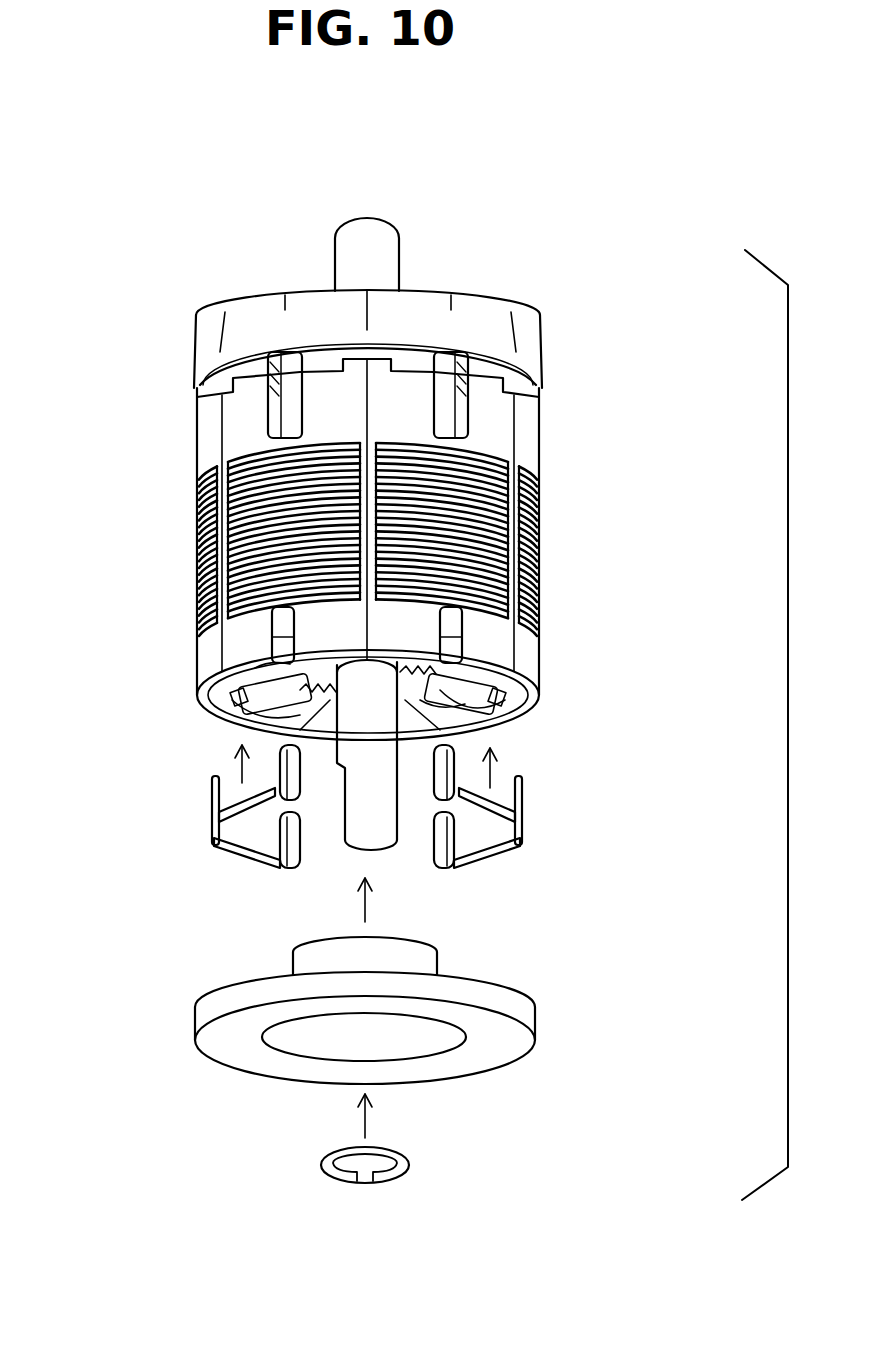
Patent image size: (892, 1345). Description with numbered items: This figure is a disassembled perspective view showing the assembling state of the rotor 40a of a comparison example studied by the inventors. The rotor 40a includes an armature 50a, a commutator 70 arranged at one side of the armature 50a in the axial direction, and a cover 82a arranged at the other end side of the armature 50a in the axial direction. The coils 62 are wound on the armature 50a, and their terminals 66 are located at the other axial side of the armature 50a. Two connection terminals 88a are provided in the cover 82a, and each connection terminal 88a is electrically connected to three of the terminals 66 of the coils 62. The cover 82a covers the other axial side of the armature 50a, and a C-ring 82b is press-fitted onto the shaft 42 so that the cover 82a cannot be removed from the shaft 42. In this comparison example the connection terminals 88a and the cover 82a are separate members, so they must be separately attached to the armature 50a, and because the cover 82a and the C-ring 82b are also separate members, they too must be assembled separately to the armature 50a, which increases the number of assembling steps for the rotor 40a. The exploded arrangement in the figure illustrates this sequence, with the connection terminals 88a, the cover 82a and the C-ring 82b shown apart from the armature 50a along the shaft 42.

The rotor 40a is at (397, 509).
The shaft 42 is at (377, 233).
The commutator 70 is at (463, 292).
The armature 50a is at (545, 445).
The coils 62 is at (240, 470).
The terminals 66 is at (268, 645).
The connection terminals 88a is at (214, 817).
The cover 82a is at (535, 1027).
The C-ring 82b is at (408, 1162).